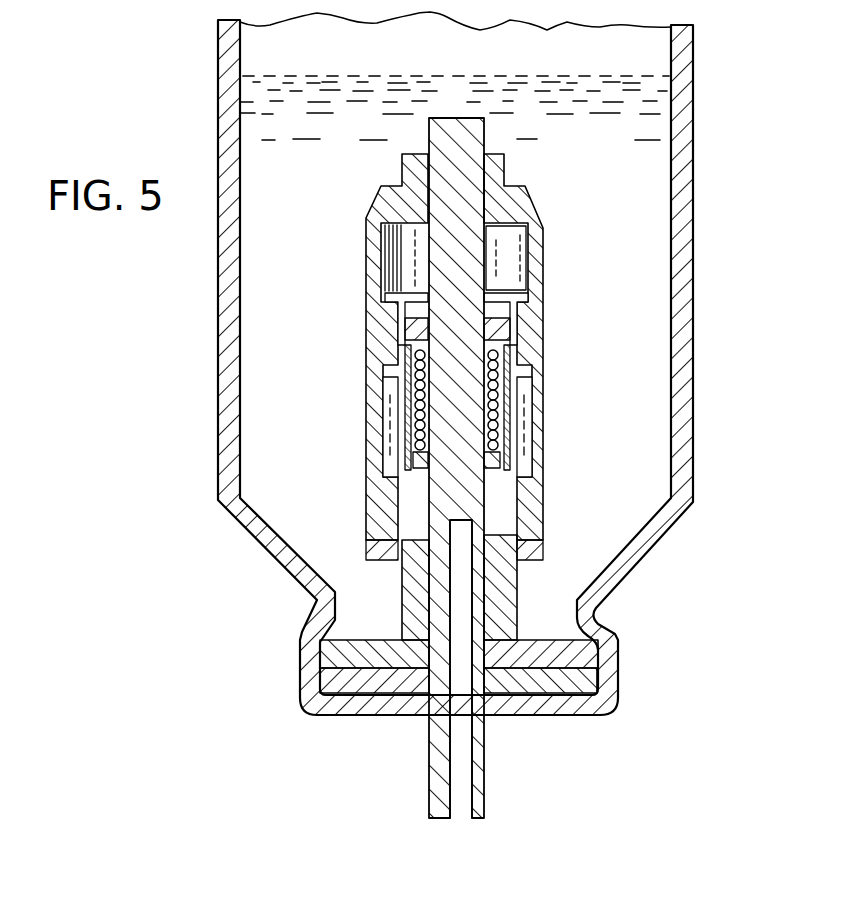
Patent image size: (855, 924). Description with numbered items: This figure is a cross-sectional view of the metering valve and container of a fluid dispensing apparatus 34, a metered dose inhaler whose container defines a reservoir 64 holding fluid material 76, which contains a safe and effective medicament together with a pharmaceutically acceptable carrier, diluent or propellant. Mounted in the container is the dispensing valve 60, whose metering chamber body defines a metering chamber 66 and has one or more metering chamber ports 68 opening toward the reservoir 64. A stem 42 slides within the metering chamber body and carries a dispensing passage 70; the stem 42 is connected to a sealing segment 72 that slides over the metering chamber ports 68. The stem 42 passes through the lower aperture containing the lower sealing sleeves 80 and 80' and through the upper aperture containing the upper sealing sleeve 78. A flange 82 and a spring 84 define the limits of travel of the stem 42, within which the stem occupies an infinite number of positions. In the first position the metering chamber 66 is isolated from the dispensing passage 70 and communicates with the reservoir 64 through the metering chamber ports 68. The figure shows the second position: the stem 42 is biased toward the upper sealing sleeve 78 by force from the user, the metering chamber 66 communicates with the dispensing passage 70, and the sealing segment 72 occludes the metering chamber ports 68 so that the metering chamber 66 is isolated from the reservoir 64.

The fluid dispensing apparatus 34 is at (712, 31).
The reservoir 64 is at (658, 116).
The fluid material 76 is at (450, 93).
The dispensing valve 60 is at (519, 173).
The sealing segment 72 is at (366, 248).
The upper sealing sleeve 78 is at (522, 315).
The metering chamber ports 68 is at (511, 344).
The spring 84 is at (498, 393).
The metering chamber 66 is at (504, 427).
The flange 82 is at (532, 468).
The lower sealing sleeve 80 is at (496, 601).
The lower sealing sleeve 80' is at (499, 675).
The stem 42 is at (488, 762).
The dispensing passage 70 is at (462, 810).